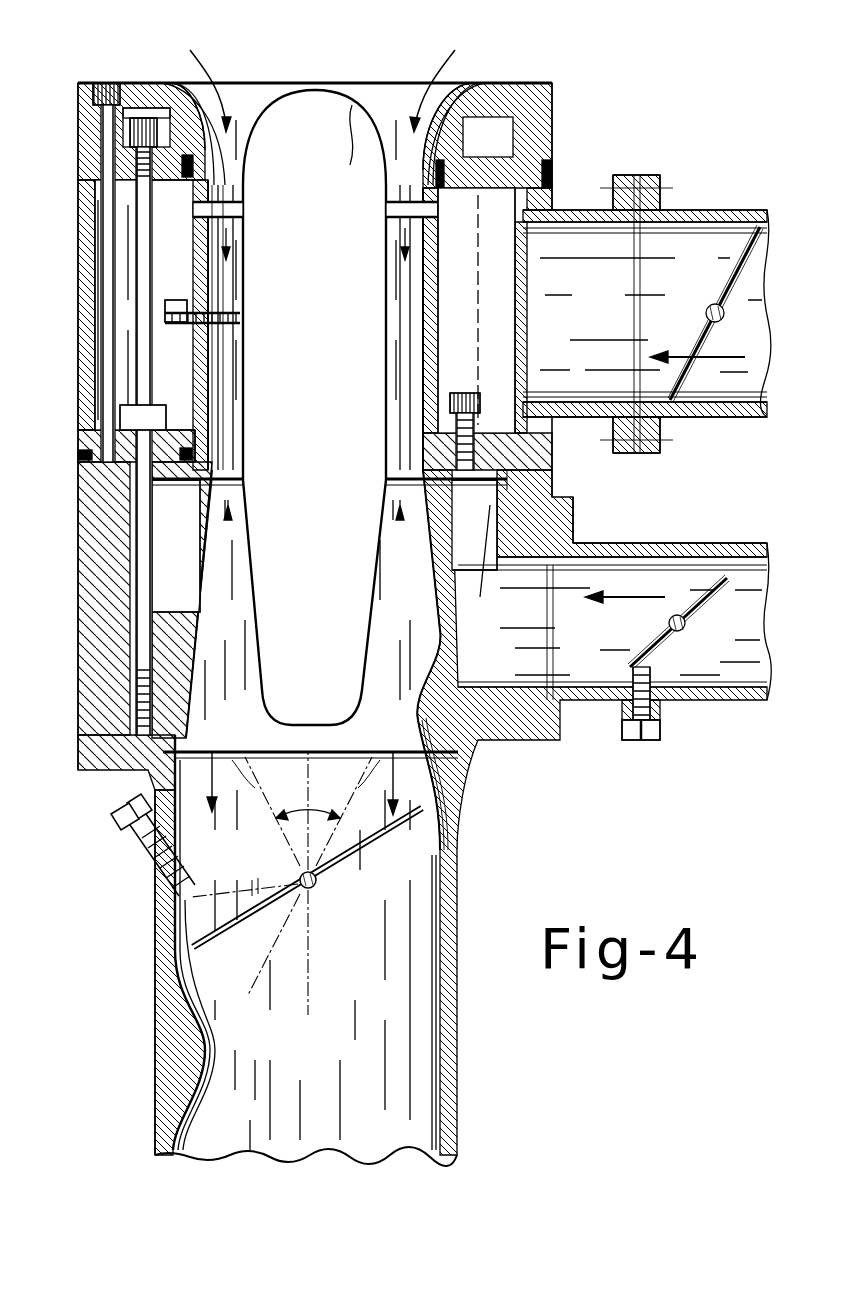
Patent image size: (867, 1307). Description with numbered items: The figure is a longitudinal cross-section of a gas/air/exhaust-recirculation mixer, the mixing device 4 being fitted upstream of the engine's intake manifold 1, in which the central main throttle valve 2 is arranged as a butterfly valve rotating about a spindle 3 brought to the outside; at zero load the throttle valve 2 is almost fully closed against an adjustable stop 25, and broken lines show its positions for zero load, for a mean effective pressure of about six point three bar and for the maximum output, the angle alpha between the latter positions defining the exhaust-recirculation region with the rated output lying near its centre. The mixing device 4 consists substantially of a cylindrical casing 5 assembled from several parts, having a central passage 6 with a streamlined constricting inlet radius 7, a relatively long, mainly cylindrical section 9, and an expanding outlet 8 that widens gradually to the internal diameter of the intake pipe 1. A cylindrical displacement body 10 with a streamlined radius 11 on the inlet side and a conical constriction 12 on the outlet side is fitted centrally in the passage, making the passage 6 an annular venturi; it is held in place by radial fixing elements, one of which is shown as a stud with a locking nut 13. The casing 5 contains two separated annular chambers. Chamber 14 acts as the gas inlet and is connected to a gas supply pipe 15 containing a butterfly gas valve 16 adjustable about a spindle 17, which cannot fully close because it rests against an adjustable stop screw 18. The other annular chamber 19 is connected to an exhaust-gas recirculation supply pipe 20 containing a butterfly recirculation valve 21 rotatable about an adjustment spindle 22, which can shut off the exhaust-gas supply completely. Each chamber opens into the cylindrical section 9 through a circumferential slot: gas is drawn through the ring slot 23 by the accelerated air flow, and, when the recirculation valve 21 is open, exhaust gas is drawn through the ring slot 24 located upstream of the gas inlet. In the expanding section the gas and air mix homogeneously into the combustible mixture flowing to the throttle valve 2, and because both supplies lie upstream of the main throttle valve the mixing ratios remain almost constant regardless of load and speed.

The intake manifold 1 is at (173, 908).
The main throttle valve 2 is at (240, 918).
The spindle 3 is at (315, 887).
The mixing device 4 is at (118, 55).
The casing 5 is at (90, 262).
The central passage 6 is at (380, 295).
The inlet radius 7 is at (192, 95).
The expanding outlet 8 is at (192, 658).
The cylindrical section 9 is at (225, 378).
The displacement body 10 is at (314, 407).
The streamlined radius 11 is at (343, 140).
The conical constriction 12 is at (233, 305).
The locking nut 13 is at (176, 300).
The annular chamber 14 is at (324, 546).
The gas supply pipe 15 is at (672, 552).
The gas valve 16 is at (660, 645).
The spindle 17 is at (684, 628).
The adjustable stop screw 18 is at (662, 715).
The annular chamber 19 is at (305, 306).
The EGR supply pipe 20 is at (690, 206).
The EGR valve 21 is at (735, 220).
The adjustment spindle 22 is at (708, 306).
The ring slot 23 is at (225, 480).
The ring slot 24 is at (233, 215).
The adjustable stop 25 is at (118, 825).